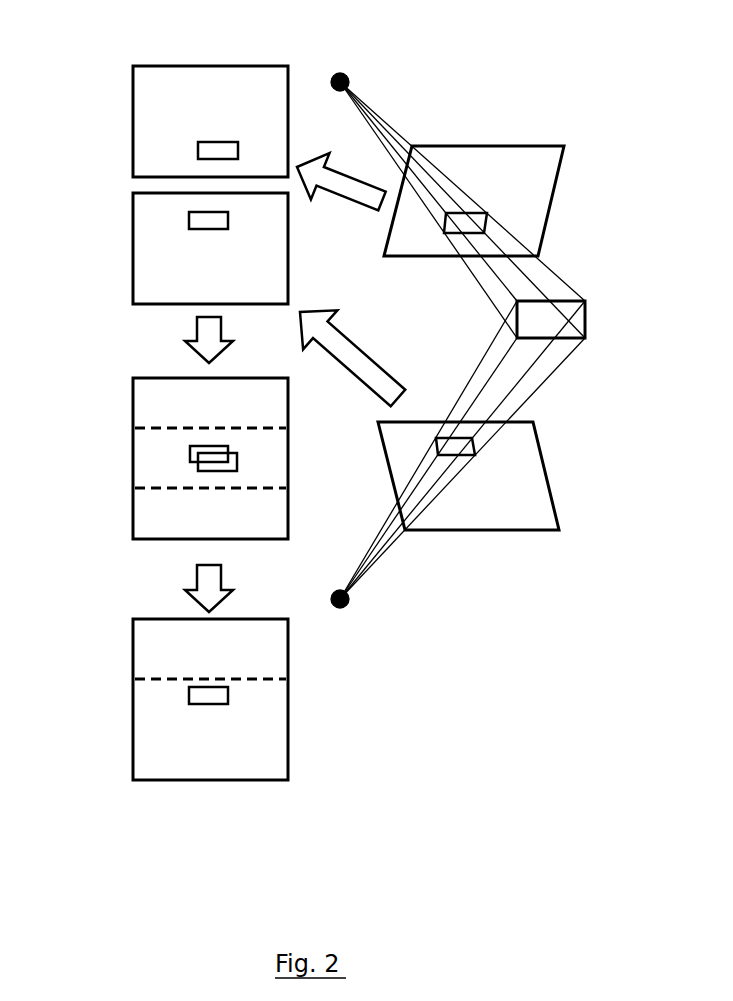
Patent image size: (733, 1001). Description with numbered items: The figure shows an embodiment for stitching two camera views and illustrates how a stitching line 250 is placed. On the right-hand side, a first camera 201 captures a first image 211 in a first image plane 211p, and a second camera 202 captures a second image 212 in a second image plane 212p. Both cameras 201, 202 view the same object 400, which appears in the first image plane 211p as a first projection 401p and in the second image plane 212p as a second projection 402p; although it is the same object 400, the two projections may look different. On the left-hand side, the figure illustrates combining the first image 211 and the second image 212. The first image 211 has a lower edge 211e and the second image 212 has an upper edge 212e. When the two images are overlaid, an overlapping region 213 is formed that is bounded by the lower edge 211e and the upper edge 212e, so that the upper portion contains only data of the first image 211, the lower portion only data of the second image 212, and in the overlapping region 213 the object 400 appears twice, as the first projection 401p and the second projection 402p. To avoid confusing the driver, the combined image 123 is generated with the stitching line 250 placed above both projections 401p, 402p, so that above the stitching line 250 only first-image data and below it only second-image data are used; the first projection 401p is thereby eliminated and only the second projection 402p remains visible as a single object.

The first camera 201 is at (348, 72).
The second camera 202 is at (348, 607).
The first image 211 is at (148, 108).
The second image 212 is at (148, 220).
The overlapping region 213 is at (150, 457).
The combined image 123 is at (143, 648).
The stitching line 250 is at (172, 680).
The lower edge 211e is at (253, 175).
The upper edge 212e is at (140, 192).
The first image plane 211p is at (473, 155).
The second image plane 212p is at (485, 510).
The object 400 is at (584, 320).
The first projection 401p is at (212, 138).
The second projection 402p is at (192, 222).